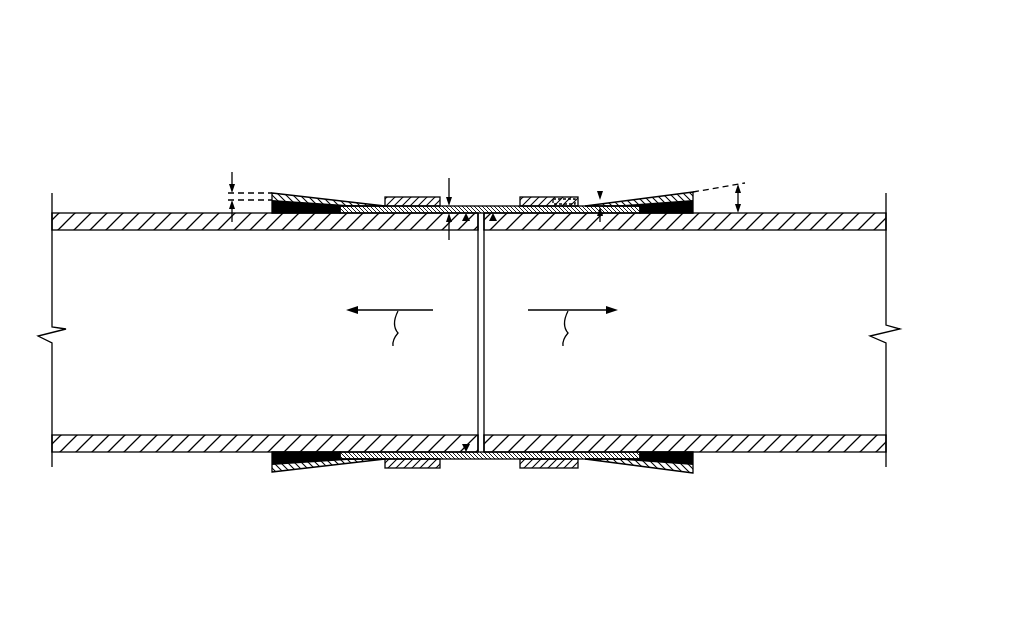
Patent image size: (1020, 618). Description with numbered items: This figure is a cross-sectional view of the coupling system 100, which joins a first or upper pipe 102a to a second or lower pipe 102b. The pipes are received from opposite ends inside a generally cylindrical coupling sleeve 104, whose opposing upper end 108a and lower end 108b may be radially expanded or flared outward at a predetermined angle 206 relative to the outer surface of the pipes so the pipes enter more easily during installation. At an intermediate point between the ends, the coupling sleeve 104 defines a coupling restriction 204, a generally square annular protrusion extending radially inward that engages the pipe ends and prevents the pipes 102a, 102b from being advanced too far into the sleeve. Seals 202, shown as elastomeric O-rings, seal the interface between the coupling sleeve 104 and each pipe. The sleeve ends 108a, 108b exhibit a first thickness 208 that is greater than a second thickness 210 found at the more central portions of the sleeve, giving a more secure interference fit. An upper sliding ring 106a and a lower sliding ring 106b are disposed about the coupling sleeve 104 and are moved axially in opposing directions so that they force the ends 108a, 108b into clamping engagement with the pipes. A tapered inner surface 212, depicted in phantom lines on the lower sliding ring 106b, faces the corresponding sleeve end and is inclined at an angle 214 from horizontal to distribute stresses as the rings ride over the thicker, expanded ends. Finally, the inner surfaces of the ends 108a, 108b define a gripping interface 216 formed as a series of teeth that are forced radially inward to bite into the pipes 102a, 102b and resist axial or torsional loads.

The coupling system 100 is at (638, 84).
The first or upper pipe 102a is at (95, 212).
The second or lower pipe 102b is at (826, 212).
The coupling sleeve 104 is at (506, 204).
The upper sliding ring 106a is at (424, 194).
The lower sliding ring 106b is at (540, 195).
The upper end 108a is at (332, 186).
The lower end 108b is at (634, 182).
The seals 202 is at (491, 222).
The coupling restriction 204 is at (468, 206).
The angle 206 is at (760, 176).
The first thickness 208 is at (232, 172).
The second thickness 210 is at (449, 240).
The tapered inner surface 212 is at (558, 197).
The angle 214 is at (600, 191).
The gripping interface 216 is at (278, 188).